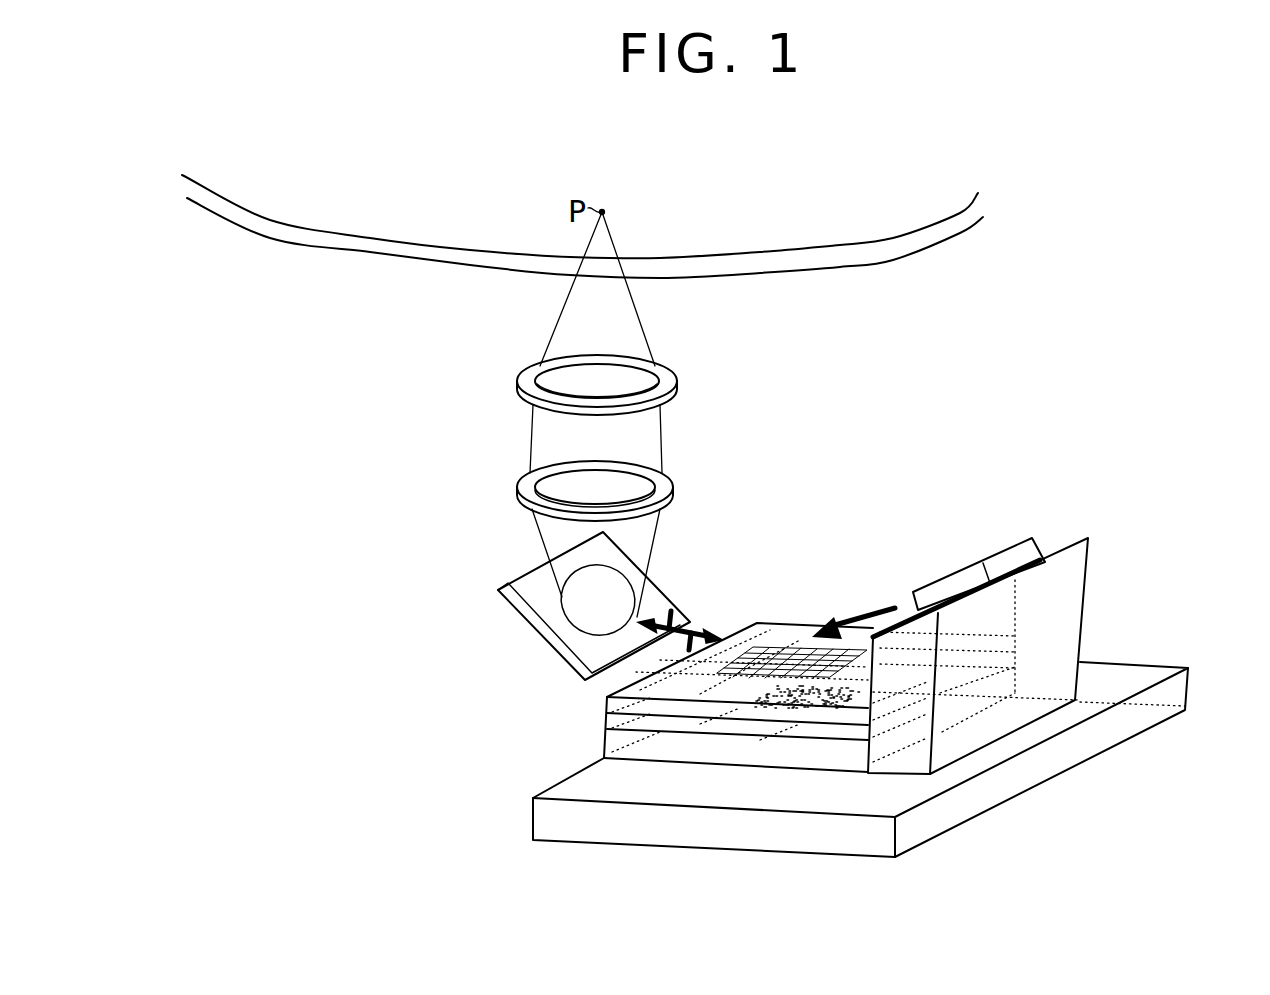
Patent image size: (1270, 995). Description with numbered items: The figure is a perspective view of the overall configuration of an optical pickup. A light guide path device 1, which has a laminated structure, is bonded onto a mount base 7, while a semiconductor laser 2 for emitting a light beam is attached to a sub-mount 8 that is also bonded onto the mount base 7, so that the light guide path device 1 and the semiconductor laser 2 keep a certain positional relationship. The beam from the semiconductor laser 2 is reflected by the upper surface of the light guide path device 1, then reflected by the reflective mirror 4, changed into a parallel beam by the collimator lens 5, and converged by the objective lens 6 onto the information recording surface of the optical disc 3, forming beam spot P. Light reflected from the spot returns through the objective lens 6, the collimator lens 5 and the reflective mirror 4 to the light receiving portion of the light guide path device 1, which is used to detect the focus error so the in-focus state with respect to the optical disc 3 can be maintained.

The light guide path device 1 is at (796, 633).
The semiconductor laser 2 is at (992, 548).
The optical disc 3 is at (842, 236).
The reflective mirror 4 is at (658, 590).
The collimator lens 5 is at (672, 478).
The objective lens 6 is at (672, 373).
The mount base 7 is at (812, 840).
The sub-mount 8 is at (1065, 618).